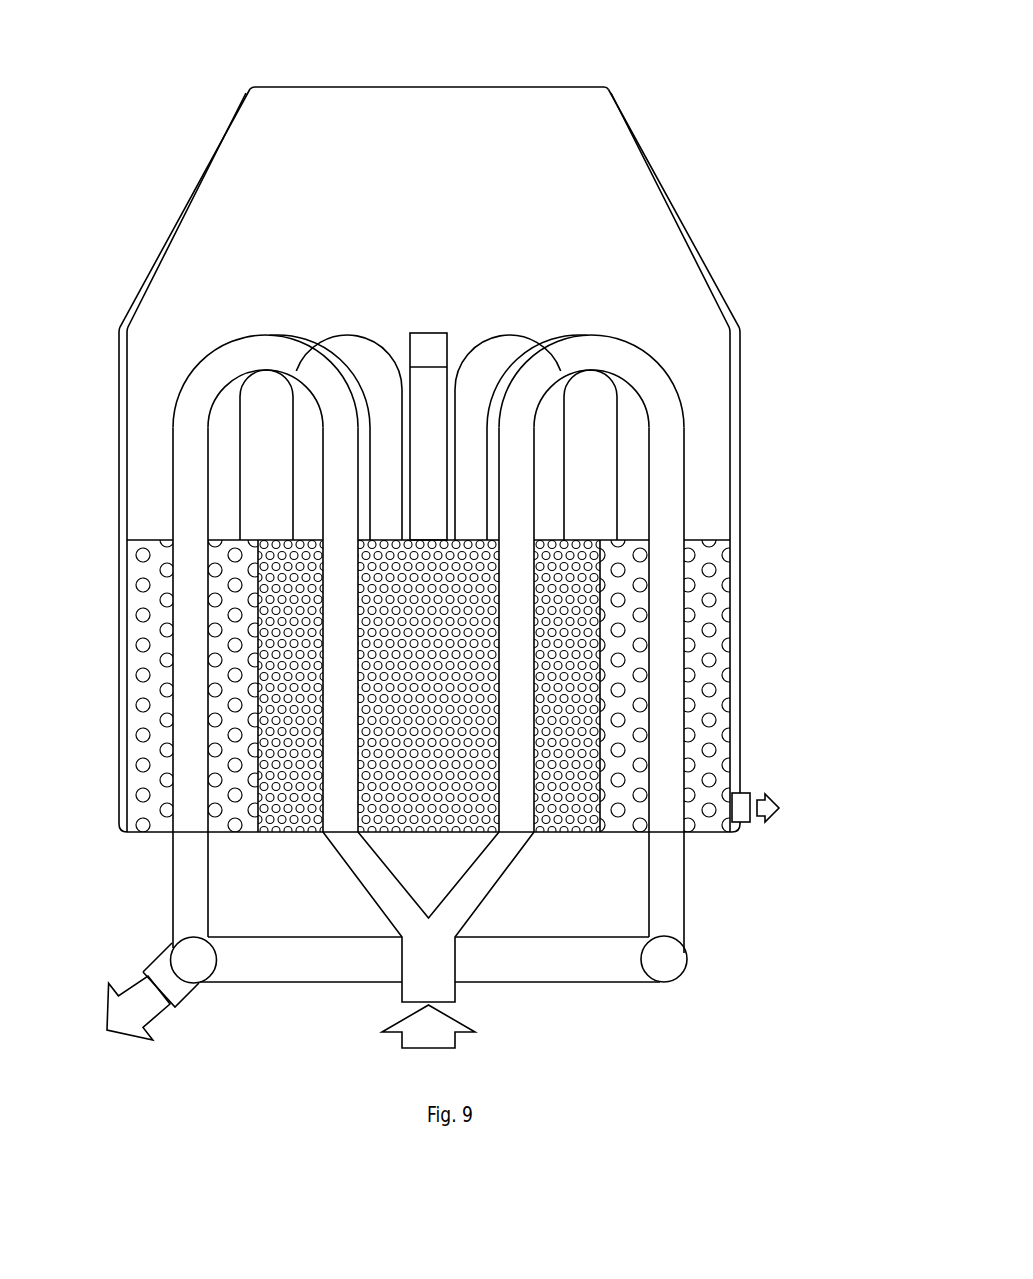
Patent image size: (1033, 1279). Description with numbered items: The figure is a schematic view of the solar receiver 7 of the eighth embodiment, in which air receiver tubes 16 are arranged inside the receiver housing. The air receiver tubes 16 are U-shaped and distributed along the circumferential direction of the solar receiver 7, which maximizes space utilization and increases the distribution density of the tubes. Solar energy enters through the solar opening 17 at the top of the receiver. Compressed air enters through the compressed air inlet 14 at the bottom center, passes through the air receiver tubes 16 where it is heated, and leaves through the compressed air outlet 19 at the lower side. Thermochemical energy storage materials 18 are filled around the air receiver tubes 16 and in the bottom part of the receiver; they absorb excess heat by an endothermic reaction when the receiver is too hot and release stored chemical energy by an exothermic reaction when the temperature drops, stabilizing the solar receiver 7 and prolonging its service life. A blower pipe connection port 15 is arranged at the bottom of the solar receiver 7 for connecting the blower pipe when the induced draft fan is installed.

The solar receiver 7 is at (400, 460).
The solar opening 17 is at (462, 73).
The air receiver tubes 16 is at (506, 613).
The thermochemical energy storage materials 18 is at (395, 686).
The blower pipe connection port 15 is at (787, 778).
The compressed air outlet of solar receiver 19 is at (230, 1014).
The compressed air inlet of solar receiver 14 is at (468, 697).